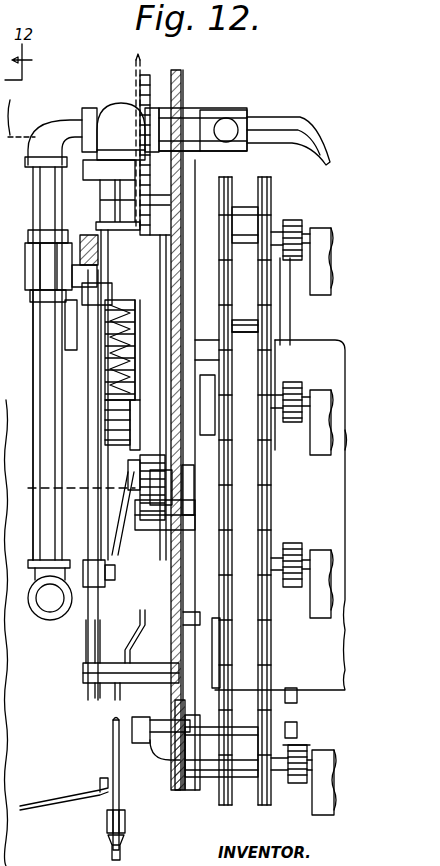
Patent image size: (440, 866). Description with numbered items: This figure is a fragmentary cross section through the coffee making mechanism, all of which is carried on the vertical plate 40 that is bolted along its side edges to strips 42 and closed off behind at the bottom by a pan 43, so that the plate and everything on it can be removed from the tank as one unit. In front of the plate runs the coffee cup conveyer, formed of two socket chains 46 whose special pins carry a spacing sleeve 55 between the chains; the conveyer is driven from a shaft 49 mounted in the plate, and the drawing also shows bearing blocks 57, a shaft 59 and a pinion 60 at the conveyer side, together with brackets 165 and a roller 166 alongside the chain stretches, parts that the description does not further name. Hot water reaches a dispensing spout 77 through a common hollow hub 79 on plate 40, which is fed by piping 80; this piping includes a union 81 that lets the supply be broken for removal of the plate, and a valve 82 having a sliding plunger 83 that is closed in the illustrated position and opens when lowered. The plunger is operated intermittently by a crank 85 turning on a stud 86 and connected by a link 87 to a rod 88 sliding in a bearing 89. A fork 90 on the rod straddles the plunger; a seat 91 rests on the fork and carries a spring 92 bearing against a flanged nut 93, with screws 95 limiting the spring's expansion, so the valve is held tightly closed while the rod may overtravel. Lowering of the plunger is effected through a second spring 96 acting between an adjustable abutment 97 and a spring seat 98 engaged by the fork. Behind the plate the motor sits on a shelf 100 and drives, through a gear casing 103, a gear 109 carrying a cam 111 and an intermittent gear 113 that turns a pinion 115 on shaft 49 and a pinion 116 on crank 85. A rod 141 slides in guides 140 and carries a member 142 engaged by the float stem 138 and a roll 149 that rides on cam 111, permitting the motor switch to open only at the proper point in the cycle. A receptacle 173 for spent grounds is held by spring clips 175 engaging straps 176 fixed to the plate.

The vertical plate 40 is at (178, 792).
The strips 42 is at (132, 734).
The pan 43 is at (70, 805).
The socket chains 46 is at (220, 636).
The shaft 49 is at (180, 203).
The spacing sleeve 55 is at (238, 776).
The bearing block 57 is at (320, 232).
The shaft 59 is at (308, 746).
The pinion 60 is at (280, 789).
The dispensing spout 77 is at (295, 124).
The hollow hub 79 is at (200, 108).
The piping 80 is at (53, 130).
The union 81 is at (38, 293).
The valve 82 is at (121, 166).
The sliding plunger 83 is at (78, 220).
The crank 85 is at (124, 510).
The stud 86 is at (71, 485).
The link 87 is at (113, 535).
The rod 88 is at (88, 642).
The bearing 89 is at (50, 233).
The fork 90 is at (43, 285).
The seat 91 is at (40, 269).
The spring 92 is at (48, 256).
The flanged nut 93 is at (68, 202).
The screws 95 is at (177, 224).
The spring 96 is at (108, 380).
The adjustable abutment 97 is at (108, 395).
The spring seat 98 is at (87, 301).
The shelf 100 is at (12, 128).
The gear casing 103 is at (67, 343).
The gear 109 is at (107, 456).
The cam 111 is at (105, 431).
The intermittent gear 113 is at (168, 346).
The pinion 115 is at (189, 157).
The pinion 116 is at (175, 527).
The hollow stem 138 is at (123, 848).
The guides 140 is at (129, 624).
The rod 141 is at (138, 62).
The member 142 is at (125, 812).
The roll 149 is at (215, 376).
The bracket 165 is at (283, 306).
The roller 166 is at (262, 327).
The receptacle 173 is at (281, 515).
The spring clips 175 is at (218, 471).
The straps 176 is at (204, 438).